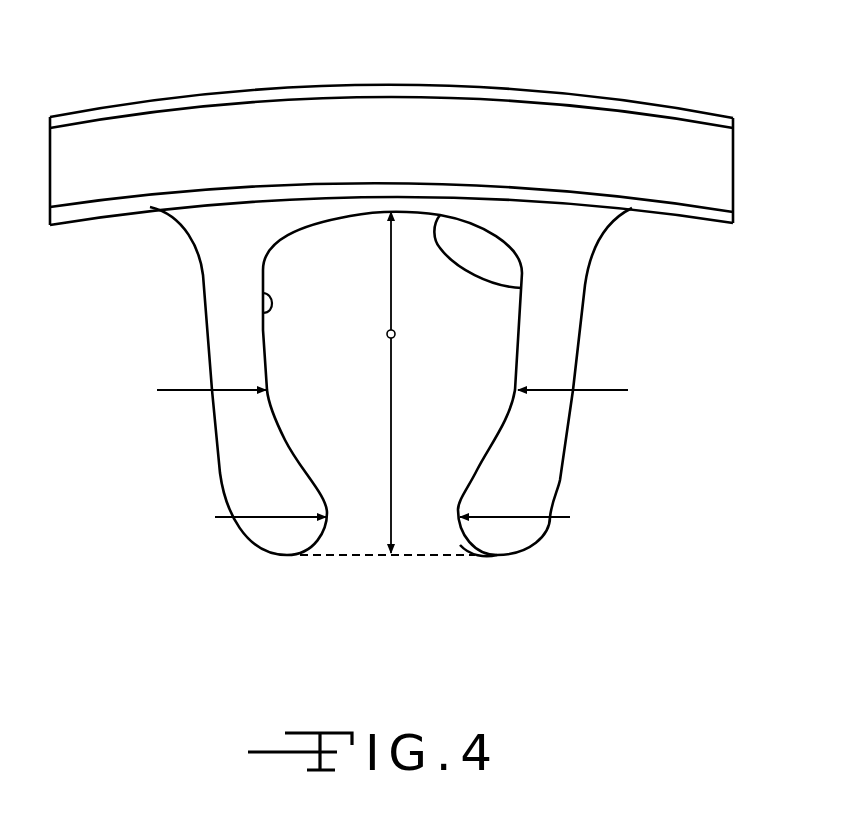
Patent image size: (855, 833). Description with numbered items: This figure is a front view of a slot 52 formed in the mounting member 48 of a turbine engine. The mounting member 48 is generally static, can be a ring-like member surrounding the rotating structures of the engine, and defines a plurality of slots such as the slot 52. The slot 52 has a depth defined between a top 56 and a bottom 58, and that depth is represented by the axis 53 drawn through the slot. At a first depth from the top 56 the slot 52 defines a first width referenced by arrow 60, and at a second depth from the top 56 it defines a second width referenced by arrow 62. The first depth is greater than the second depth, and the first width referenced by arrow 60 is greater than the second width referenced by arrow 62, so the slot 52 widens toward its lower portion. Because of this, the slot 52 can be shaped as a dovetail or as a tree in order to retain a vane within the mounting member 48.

The mounting member 48 is at (149, 80).
The slot 52 is at (263, 313).
The axis 53 is at (393, 397).
The top 56 is at (482, 553).
The bottom 58 is at (522, 288).
The arrow 60 is at (593, 390).
The arrow 62 is at (534, 518).